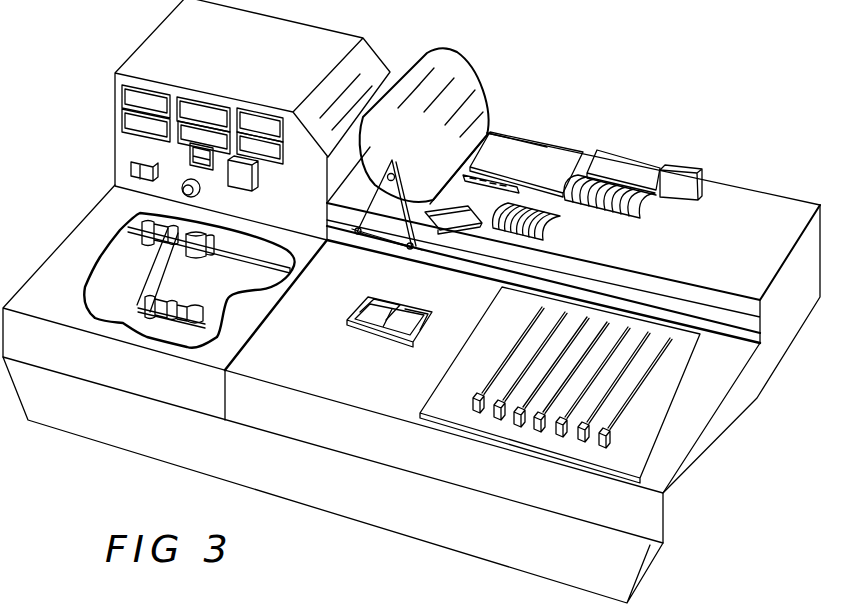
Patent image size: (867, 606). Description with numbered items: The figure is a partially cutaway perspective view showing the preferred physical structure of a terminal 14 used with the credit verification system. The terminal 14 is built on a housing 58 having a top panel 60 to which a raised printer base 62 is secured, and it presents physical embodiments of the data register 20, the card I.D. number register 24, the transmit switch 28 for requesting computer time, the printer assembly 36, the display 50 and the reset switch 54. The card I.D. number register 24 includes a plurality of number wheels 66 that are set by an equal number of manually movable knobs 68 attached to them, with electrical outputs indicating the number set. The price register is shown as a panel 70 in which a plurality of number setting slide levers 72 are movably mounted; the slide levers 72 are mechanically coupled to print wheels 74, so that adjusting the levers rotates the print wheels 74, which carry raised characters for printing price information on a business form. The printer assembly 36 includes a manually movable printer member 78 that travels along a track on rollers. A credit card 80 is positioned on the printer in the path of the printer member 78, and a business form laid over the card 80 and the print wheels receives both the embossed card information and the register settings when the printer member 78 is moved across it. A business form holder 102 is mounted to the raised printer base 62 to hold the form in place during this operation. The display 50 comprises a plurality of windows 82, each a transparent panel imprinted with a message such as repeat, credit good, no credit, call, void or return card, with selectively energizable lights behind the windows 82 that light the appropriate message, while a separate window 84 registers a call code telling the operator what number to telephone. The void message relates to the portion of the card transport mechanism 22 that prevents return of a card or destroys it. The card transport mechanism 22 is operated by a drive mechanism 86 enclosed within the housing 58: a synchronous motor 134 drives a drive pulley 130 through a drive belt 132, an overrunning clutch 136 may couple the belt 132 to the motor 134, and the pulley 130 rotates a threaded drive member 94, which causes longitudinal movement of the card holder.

The terminal 14 is at (630, 115).
The data register 20 is at (548, 231).
The card transport mechanism 22 is at (503, 127).
The card I.D. number register 24 is at (434, 312).
The request computer time or transmit switch 28 is at (259, 173).
The printer assembly 36 is at (498, 91).
The display 50 is at (98, 117).
The reset switch 54 is at (205, 192).
The housing 58 is at (376, 515).
The top panel 60 is at (359, 397).
The raised printer base 62 is at (762, 234).
The number wheels 66 is at (390, 340).
The manually movable knobs 68 is at (381, 306).
The panel 70 is at (676, 405).
The number setting slide levers 72 is at (537, 426).
The print wheels 74 is at (620, 207).
The manually movable printer member 78 is at (475, 121).
The credit card 80 is at (513, 177).
The windows 82 is at (252, 114).
The separate window 84 is at (190, 144).
The drive mechanism 86 is at (115, 279).
The threaded drive member 94 is at (258, 261).
The business form holder 102 is at (448, 226).
The drive pulley 130 is at (141, 234).
The drive belt 132 is at (140, 298).
The synchronous motor 134 is at (198, 324).
The overrunning clutch 136 is at (152, 324).